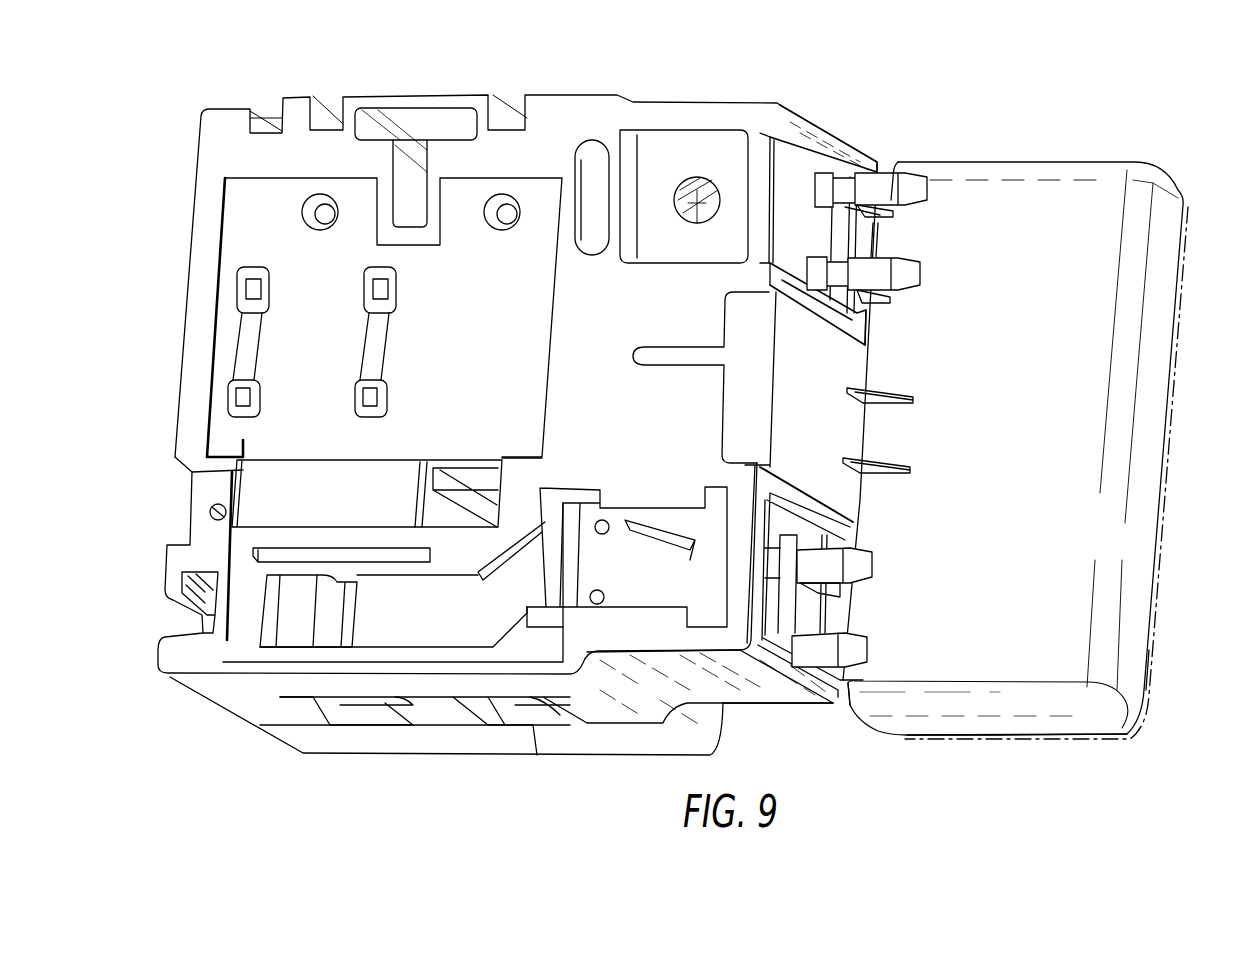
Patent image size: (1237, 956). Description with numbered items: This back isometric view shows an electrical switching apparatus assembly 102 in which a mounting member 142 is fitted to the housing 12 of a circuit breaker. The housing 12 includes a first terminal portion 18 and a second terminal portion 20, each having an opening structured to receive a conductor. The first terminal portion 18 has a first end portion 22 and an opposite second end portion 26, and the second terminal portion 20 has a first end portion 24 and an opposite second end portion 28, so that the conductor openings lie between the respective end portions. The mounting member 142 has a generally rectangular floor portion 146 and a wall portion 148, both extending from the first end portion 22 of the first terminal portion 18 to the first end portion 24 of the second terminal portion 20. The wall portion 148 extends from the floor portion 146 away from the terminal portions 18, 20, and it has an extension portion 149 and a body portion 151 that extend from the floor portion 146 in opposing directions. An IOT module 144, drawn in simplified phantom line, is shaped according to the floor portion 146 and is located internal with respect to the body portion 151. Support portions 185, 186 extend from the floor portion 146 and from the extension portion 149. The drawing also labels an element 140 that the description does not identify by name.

The housing 12 is at (595, 727).
The first terminal portion 18 is at (820, 123).
The second terminal portion 20 is at (750, 690).
The first end portion 22 is at (880, 163).
The first end portion 24 is at (808, 705).
The second end portion 26 is at (777, 110).
The second end portion 28 is at (677, 637).
The electrical switching apparatus assembly 102 is at (1114, 133).
The cover 140 is at (937, 153).
The mounting member 142 is at (945, 746).
The IOT module 144 is at (1140, 738).
The floor portion 146 is at (1073, 639).
The wall portion 148 is at (1068, 725).
The extension portion 149 is at (840, 368).
The body portion 151 is at (993, 725).
The support portion 185 is at (900, 394).
The support portion 186 is at (893, 463).